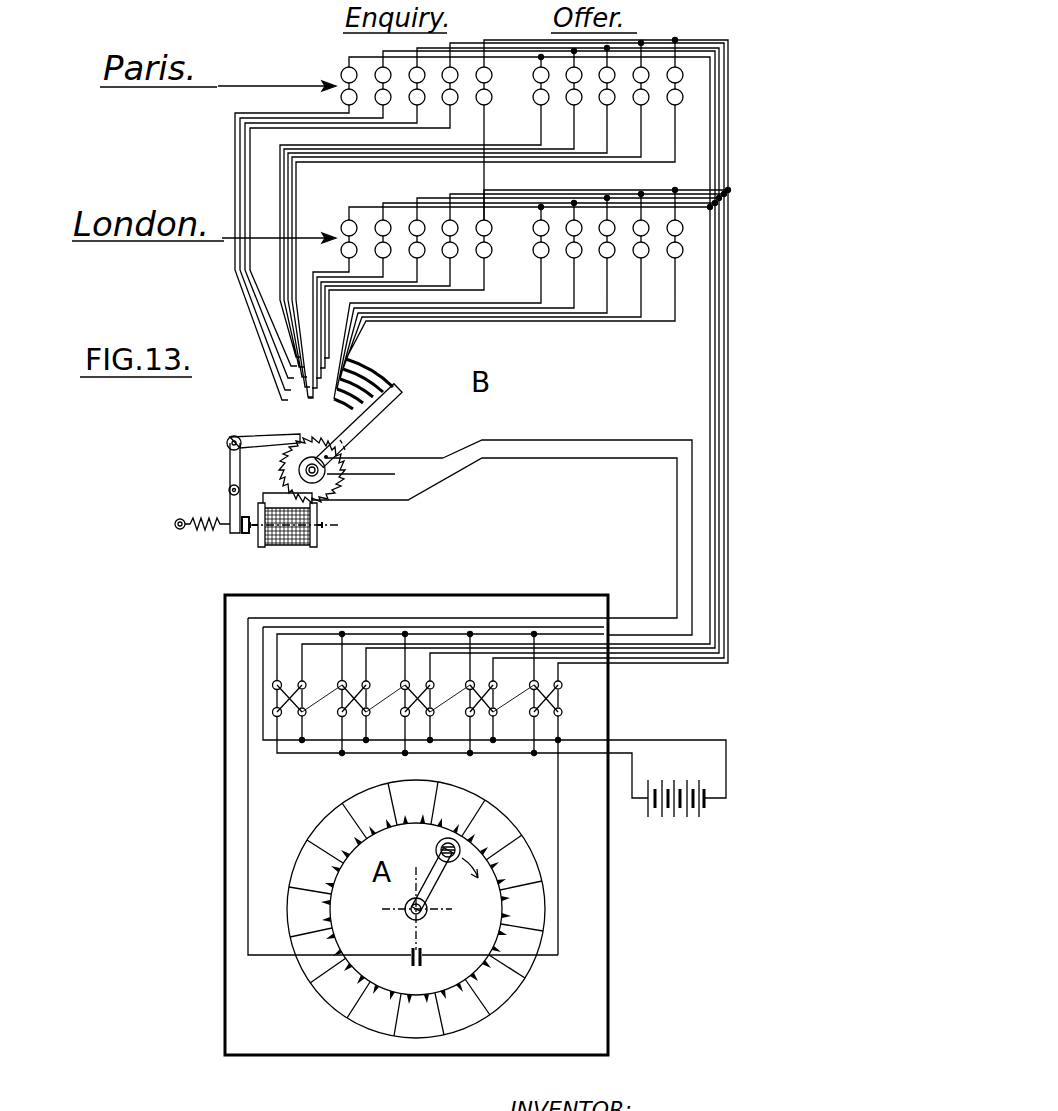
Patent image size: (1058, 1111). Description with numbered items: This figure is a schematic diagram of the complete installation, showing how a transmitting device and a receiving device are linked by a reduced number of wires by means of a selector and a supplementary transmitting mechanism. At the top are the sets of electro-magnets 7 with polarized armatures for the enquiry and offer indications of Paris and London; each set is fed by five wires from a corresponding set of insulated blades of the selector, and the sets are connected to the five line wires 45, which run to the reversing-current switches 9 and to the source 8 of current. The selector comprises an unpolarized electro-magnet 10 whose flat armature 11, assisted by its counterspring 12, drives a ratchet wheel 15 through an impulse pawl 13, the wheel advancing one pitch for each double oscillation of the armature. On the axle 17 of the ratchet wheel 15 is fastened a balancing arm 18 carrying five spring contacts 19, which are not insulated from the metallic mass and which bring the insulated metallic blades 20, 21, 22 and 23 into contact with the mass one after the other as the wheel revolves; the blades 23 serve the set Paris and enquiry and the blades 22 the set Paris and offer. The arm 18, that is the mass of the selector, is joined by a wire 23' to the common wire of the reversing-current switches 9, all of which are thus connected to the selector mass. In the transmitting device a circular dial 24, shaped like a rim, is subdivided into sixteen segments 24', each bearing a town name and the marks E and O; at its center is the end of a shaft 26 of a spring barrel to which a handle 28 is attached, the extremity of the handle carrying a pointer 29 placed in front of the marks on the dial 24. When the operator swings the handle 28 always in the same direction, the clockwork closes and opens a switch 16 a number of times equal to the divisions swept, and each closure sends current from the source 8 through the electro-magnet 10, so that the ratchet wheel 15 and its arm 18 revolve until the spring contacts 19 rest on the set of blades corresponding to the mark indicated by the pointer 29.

The electro-magnets with polarized armatures 7 is at (342, 70).
The source of current 8 is at (665, 814).
The reversing-current switches 9 is at (303, 693).
The unpolarized electro-magnet 10 is at (292, 546).
The flat armature 11 is at (246, 536).
The counterspring 12 is at (206, 518).
The impulse pawl 13 is at (252, 442).
The ratchet wheel 15 is at (282, 465).
The switch 16 is at (424, 962).
The axle 17 is at (330, 474).
The balancing arm 18 is at (398, 396).
The spring contacts 19 is at (345, 428).
The insulated metallic blades 20 is at (402, 365).
The insulated metallic blades 21 is at (334, 346).
The insulated metallic blades 22 is at (307, 400).
The insulated metallic blades 23 is at (342, 252).
The common wire 23' is at (477, 523).
The circular dial 24 is at (404, 909).
The segments 24' is at (431, 814).
The shaft 26 is at (406, 915).
The handle 28 is at (428, 890).
The pointer 29 is at (437, 846).
The line wires 45 is at (712, 383).